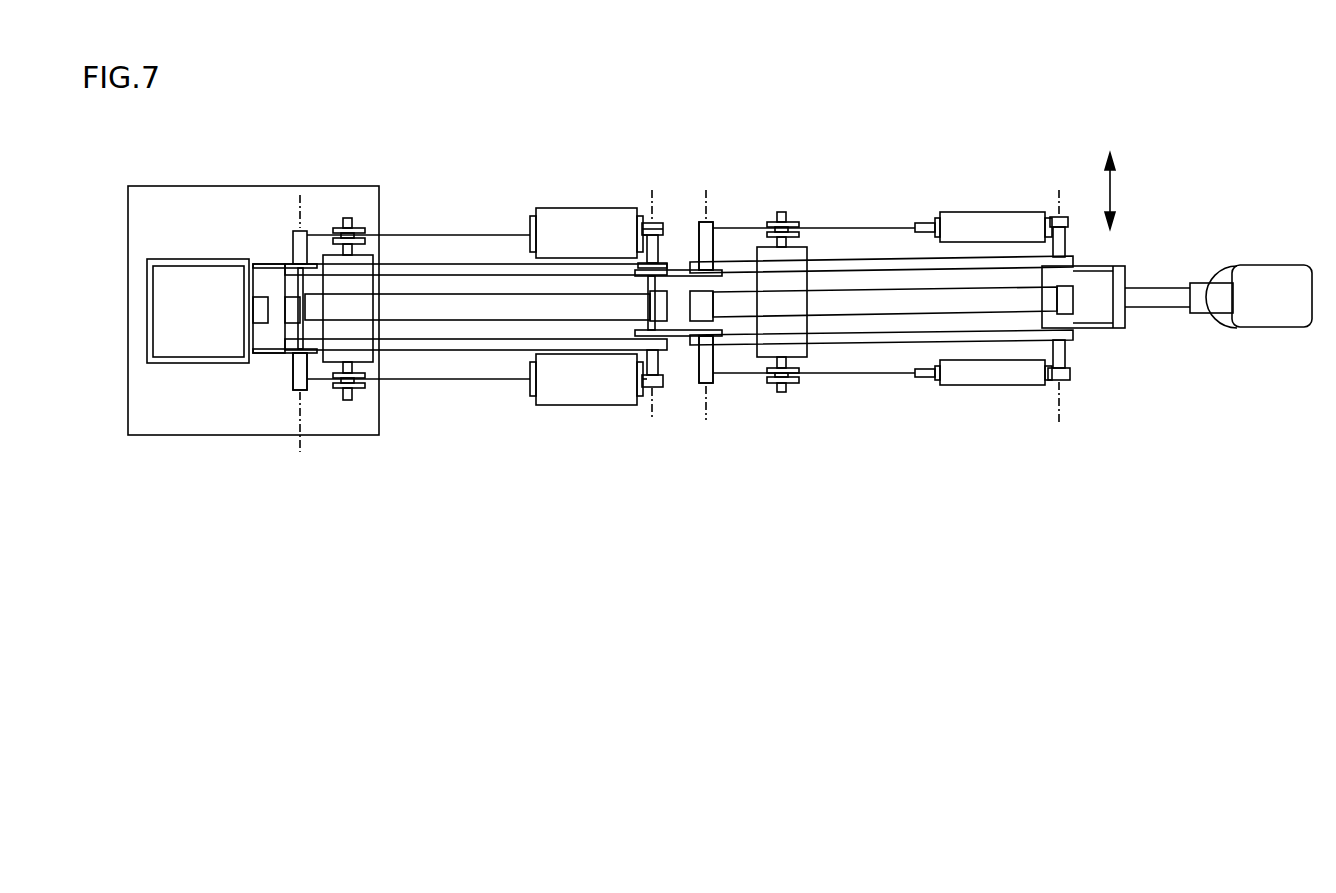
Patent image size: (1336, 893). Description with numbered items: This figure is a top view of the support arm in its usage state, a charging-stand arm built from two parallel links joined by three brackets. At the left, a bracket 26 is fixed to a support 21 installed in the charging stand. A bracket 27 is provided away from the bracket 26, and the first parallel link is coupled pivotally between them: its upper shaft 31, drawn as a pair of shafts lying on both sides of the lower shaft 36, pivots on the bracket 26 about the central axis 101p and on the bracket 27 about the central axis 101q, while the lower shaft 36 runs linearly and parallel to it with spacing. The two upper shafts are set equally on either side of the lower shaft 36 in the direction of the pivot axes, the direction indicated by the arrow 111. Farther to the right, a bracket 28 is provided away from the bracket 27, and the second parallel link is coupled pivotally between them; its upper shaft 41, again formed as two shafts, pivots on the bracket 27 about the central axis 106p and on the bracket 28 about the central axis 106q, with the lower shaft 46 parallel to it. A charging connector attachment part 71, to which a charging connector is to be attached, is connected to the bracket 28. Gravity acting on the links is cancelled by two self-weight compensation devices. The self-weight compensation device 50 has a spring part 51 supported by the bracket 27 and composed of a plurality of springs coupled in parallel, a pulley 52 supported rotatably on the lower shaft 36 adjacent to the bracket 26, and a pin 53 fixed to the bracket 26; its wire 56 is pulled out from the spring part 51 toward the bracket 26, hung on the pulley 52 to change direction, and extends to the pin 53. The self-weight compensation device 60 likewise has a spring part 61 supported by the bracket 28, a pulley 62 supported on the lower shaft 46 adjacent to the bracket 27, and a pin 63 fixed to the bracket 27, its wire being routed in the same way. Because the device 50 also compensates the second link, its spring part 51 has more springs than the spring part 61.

The support 21 is at (197, 362).
The bracket 26 is at (272, 263).
The bracket 27 is at (682, 270).
The bracket 28 is at (1098, 328).
The upper shaft 31 is at (423, 263).
The lower shaft 36 is at (495, 306).
The upper shaft 41 is at (833, 262).
The lower shaft 46 is at (893, 302).
The self-weight compensation device 50 is at (587, 204).
The spring part 51 is at (570, 406).
The pulley 52 is at (355, 399).
The pin 53 is at (295, 373).
The wire 56 is at (487, 385).
The self-weight compensation device 60 is at (990, 209).
The spring part 61 is at (989, 386).
The pulley 62 is at (792, 393).
The pin 63 is at (700, 366).
The charging connector attachment part 71 is at (1280, 312).
The central axis 101p is at (300, 393).
The central axis 101q is at (650, 390).
The central axis 106p is at (710, 388).
The central axis 106q is at (1058, 382).
The arrow 111 is at (1110, 192).